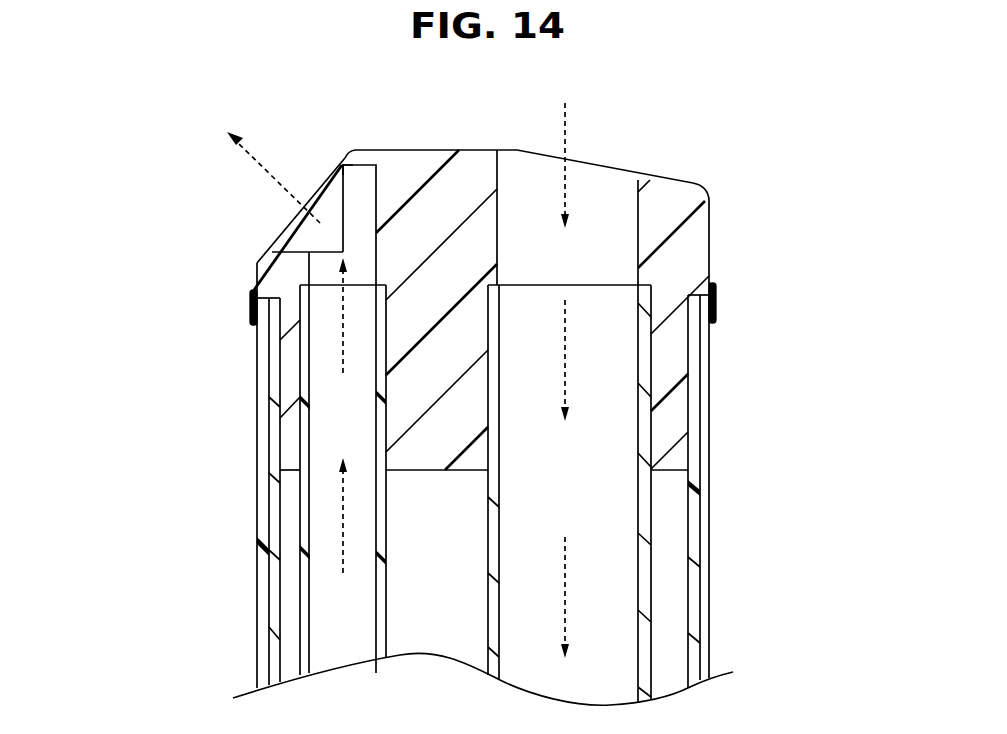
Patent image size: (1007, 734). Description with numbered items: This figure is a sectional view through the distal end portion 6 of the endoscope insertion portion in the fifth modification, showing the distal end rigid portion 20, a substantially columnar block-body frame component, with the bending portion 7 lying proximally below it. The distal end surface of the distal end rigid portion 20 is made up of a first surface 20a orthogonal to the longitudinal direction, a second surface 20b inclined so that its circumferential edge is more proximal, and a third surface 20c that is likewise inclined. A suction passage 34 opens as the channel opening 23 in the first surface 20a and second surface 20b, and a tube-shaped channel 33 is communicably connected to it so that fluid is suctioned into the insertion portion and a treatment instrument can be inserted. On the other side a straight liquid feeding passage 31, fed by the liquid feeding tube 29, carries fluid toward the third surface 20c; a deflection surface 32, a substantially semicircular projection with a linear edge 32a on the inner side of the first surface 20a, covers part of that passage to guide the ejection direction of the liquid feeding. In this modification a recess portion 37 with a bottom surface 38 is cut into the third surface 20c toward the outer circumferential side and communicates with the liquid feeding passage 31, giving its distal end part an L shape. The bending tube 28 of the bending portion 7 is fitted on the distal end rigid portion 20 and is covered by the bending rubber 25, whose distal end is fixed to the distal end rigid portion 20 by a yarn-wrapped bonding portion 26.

The distal end portion 6 is at (683, 113).
The bending portion 7 is at (757, 557).
The distal end rigid portion 20 is at (441, 391).
The first surface 20a is at (497, 148).
The second surface 20b is at (688, 180).
The third surface 20c is at (268, 252).
The channel opening 23 is at (597, 163).
The bending rubber 25 is at (258, 405).
The yarn-wrapped bonding portion 26 is at (716, 306).
The bending tube 28 is at (275, 497).
The liquid feeding tube 29 is at (307, 580).
The liquid feeding passage 31 is at (323, 268).
The deflection surface 32 is at (357, 172).
The linear edge 32a is at (342, 165).
The channel 33 is at (653, 493).
The suction passage 34 is at (613, 238).
The recess portion 37 is at (326, 201).
The bottom surface 38 is at (288, 248).